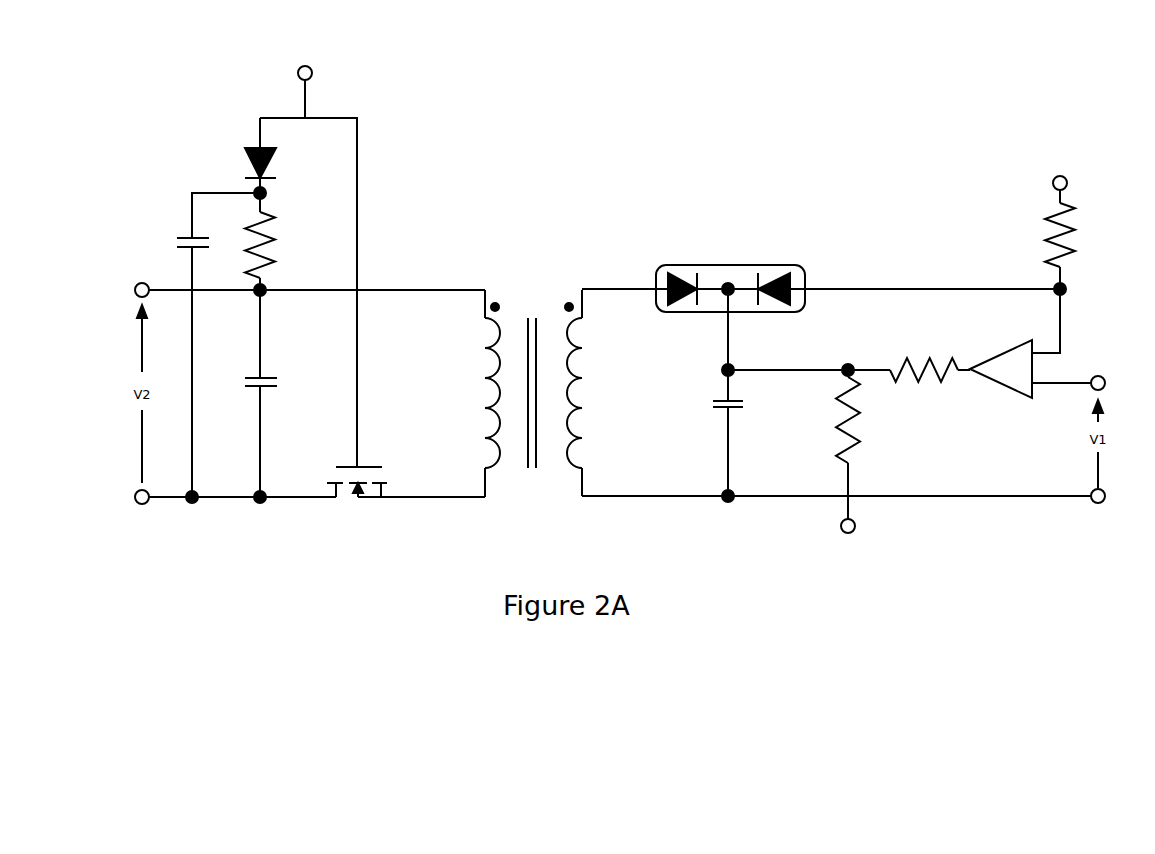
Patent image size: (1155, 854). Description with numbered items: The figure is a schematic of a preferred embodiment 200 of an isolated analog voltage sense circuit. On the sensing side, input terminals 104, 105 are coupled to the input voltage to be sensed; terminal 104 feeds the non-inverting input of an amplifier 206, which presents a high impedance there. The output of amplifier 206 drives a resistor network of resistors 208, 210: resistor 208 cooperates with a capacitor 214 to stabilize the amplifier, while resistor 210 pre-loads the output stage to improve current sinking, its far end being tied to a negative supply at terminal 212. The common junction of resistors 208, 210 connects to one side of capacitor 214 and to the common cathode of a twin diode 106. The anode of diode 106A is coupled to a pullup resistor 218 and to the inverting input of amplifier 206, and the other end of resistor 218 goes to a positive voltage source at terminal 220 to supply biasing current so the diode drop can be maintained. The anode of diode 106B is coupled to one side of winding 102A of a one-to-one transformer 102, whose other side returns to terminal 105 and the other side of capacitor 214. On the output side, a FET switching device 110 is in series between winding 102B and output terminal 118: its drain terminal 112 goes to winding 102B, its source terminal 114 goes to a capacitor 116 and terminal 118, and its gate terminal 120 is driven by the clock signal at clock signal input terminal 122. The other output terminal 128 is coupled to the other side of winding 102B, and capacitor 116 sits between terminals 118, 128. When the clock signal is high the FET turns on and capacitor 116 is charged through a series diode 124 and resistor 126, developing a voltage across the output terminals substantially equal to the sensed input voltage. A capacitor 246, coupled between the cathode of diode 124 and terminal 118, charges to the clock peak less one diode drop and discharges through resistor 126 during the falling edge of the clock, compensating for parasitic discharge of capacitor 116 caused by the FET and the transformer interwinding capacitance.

The isolated analog voltage sense circuit 200 is at (901, 175).
The transformer 102 is at (530, 371).
The winding 102A is at (582, 377).
The winding 102B is at (485, 377).
The input terminal 104 is at (1103, 377).
The input terminal 105 is at (1103, 489).
The twin diode 106 is at (821, 274).
The diode 106A is at (779, 274).
The diode 106B is at (679, 273).
The switching device 110 is at (378, 480).
The drain terminal 112 is at (387, 499).
The source terminal 114 is at (328, 500).
The capacitor 116 is at (277, 377).
The output terminal 118 is at (134, 495).
The gate terminal 120 is at (357, 462).
The clock signal input terminal 122 is at (299, 67).
The diode 124 is at (252, 150).
The resistor 126 is at (276, 222).
The output terminal 128 is at (134, 288).
The amplifier 206 is at (1022, 342).
The resistor 208 is at (897, 360).
The resistor 210 is at (863, 420).
The terminal 212 is at (840, 528).
The capacitor 214 is at (716, 407).
The pullup resistor 218 is at (1072, 212).
The terminal 220 is at (1065, 177).
The capacitor 246 is at (177, 240).